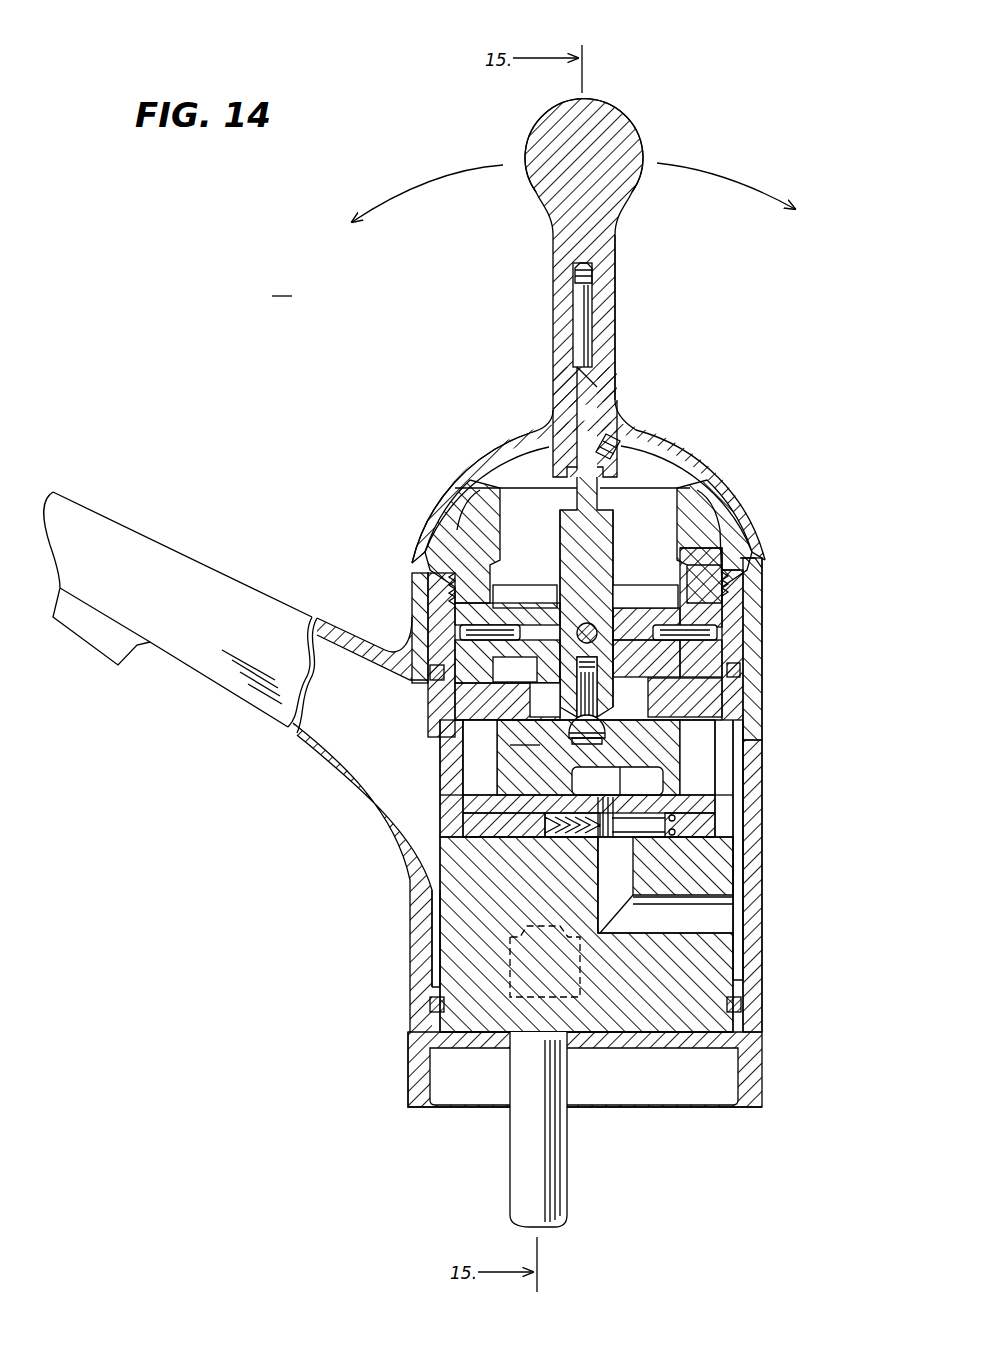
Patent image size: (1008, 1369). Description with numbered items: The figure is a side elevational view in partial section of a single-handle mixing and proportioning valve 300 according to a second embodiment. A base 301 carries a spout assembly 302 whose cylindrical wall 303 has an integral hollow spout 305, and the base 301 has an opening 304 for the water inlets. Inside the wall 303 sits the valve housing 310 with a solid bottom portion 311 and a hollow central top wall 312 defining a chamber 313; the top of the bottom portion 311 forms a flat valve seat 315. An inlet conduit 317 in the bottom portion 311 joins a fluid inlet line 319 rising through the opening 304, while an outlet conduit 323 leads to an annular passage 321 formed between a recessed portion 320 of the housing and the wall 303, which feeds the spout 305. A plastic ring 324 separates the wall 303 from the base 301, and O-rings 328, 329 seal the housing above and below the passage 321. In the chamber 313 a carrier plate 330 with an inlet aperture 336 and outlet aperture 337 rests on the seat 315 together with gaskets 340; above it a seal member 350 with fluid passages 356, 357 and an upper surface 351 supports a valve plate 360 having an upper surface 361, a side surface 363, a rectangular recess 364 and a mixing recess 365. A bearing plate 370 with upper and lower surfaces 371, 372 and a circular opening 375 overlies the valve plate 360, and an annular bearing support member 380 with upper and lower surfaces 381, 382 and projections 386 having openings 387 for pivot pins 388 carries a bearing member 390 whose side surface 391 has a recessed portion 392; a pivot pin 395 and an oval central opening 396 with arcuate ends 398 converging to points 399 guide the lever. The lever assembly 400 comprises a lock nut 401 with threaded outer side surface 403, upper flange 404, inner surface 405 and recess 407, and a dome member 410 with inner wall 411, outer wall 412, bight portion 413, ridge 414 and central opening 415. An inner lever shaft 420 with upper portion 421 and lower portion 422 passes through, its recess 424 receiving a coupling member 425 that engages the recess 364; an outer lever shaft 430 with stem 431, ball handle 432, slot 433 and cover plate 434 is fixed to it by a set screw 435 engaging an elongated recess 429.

The mixing and proportioning valve 300 is at (286, 285).
The base 301 is at (762, 1100).
The spout assembly 302 is at (388, 822).
The cylindrical wall 303 is at (730, 967).
The opening 304 is at (700, 1042).
The hollow spout 305 is at (148, 535).
The valve housing 310 is at (620, 1037).
The solid bottom portion 311 is at (715, 952).
The central top wall 312 is at (742, 645).
The chamber 313 is at (700, 765).
The valve seat 315 is at (720, 825).
The inlet conduit 317 is at (545, 895).
The fluid inlet line 319 is at (527, 1180).
The recessed portion 320 is at (445, 722).
The annular passage 321 is at (435, 955).
The outlet conduit 323 is at (700, 906).
The plastic ring 324 is at (742, 1020).
The O-ring 328 is at (428, 1005).
The O-ring 329 is at (422, 678).
The carrier plate 330 is at (465, 820).
The inlet aperture 336 is at (525, 835).
The outlet aperture 337 is at (616, 830).
The gasket 340 is at (660, 848).
The seal member 350 is at (720, 805).
The upper surface 351 is at (740, 800).
The fluid passage 356 is at (617, 781).
The fluid passage 357 is at (643, 781).
The valve plate 360 is at (460, 790).
The upper surface 361 is at (725, 708).
The side surface 363 is at (452, 772).
The rectangular recess 364 is at (606, 732).
The recess 365 is at (604, 744).
The bearing plate 370 is at (468, 706).
The upper surface 371 is at (733, 670).
The lower surface 372 is at (460, 745).
The circular opening 375 is at (545, 730).
The bearing support member 380 is at (742, 690).
The upper surface 381 is at (540, 612).
The lower surface 382 is at (460, 700).
The projection 386 is at (515, 669).
The opening 387 is at (412, 630).
The pivot pin 388 is at (448, 600).
The bearing member 390 is at (660, 624).
The side surface 391 is at (612, 600).
The recessed portion 392 is at (741, 665).
The pivot pin 395 is at (566, 583).
The central opening 396 is at (558, 602).
The arcuate end 398 is at (598, 692).
The point 399 is at (605, 604).
The lever assembly 400 is at (657, 378).
The lock nut 401 is at (770, 548).
The outer side surface 403 is at (736, 590).
The upper flange 404 is at (742, 560).
The inner surface 405 is at (675, 588).
The recess 407 is at (672, 572).
The dome member 410 is at (652, 490).
The inner wall 411 is at (750, 535).
The outer wall 412 is at (745, 510).
The bight portion 413 is at (706, 500).
The ridge 414 is at (440, 545).
The central opening 415 is at (518, 520).
The inner lever shaft 420 is at (558, 533).
The upper portion 421 is at (591, 335).
The lower portion 422 is at (604, 538).
The recess 424 is at (542, 690).
The coupling member 425 is at (512, 748).
The elongated recess 429 is at (599, 378).
The outer lever shaft 430 is at (551, 312).
The stem 431 is at (611, 285).
The ball handle 432 is at (625, 150).
The slot 433 is at (574, 272).
The cover plate 434 is at (470, 470).
The set screw 435 is at (619, 433).